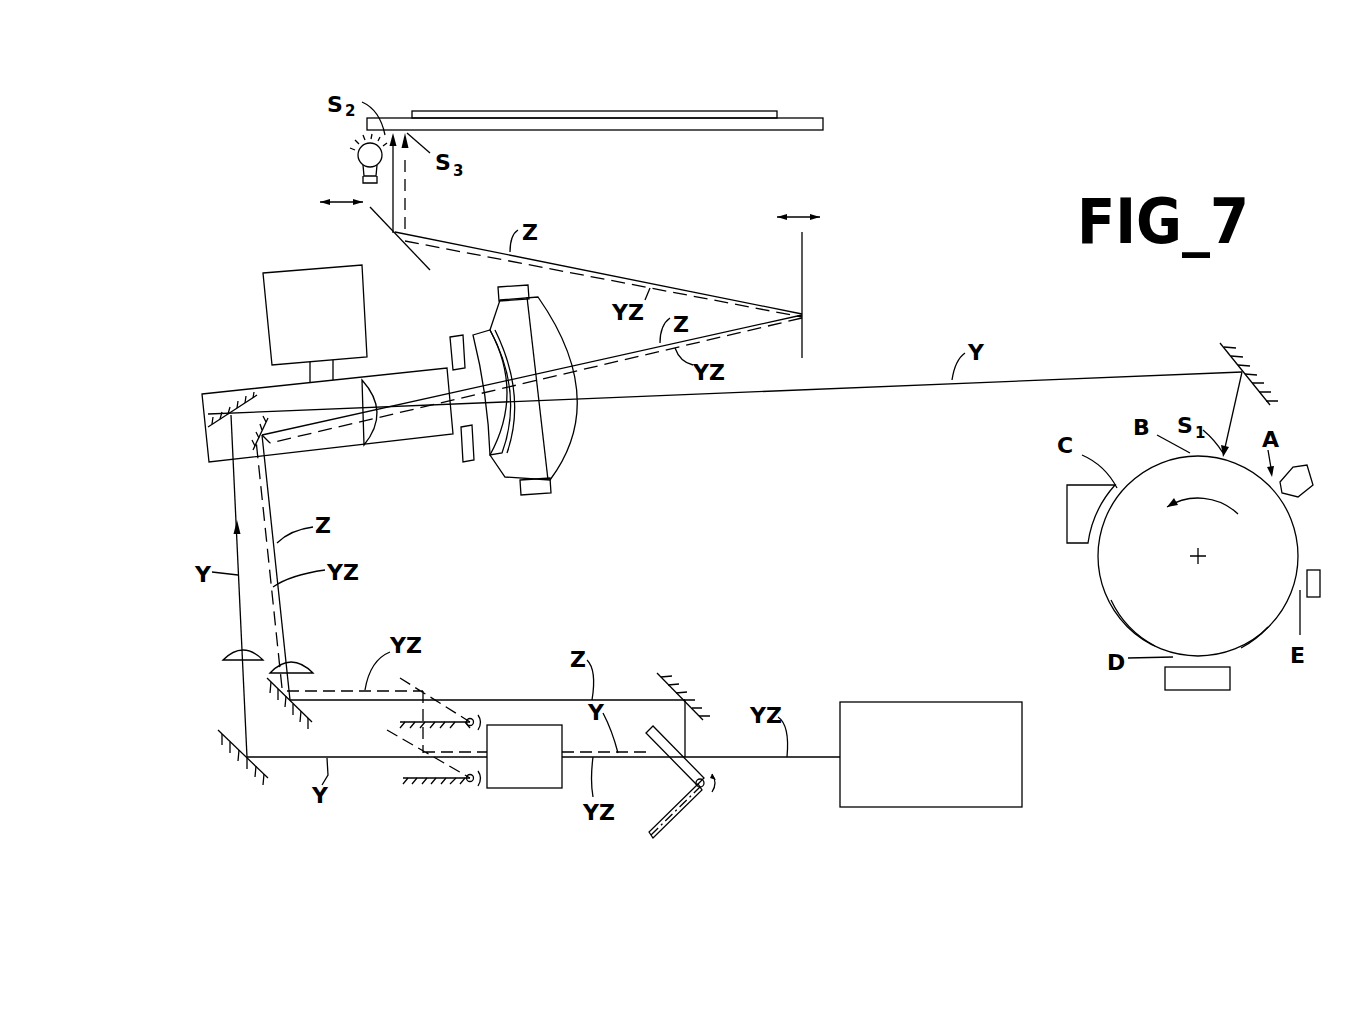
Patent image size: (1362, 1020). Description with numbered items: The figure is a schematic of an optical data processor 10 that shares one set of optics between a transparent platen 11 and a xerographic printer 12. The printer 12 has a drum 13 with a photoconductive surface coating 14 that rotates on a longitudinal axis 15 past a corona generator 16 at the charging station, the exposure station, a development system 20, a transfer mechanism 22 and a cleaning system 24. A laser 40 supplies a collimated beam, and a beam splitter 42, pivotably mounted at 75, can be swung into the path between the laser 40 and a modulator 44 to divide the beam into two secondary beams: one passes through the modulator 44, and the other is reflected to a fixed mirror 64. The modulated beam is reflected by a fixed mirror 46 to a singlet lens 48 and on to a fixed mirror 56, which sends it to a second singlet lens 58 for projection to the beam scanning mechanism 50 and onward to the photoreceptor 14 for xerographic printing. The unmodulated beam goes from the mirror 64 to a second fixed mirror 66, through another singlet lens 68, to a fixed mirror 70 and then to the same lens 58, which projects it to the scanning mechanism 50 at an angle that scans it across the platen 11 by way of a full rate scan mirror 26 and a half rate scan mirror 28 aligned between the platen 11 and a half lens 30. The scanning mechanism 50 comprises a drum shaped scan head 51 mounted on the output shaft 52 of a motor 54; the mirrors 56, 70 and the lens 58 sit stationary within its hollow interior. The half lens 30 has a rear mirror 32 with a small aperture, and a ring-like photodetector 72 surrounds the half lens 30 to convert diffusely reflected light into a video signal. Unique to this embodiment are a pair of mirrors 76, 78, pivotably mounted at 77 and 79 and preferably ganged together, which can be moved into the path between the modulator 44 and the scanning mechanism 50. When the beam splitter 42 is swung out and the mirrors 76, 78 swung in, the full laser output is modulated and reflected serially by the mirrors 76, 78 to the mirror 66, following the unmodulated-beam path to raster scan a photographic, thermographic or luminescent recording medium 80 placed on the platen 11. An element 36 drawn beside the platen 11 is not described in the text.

The optical data processor 10 is at (987, 227).
The recording medium 80 is at (675, 105).
The transparent platen 11 is at (815, 118).
The lamp 36 is at (358, 167).
The full rate scan mirror 26 is at (377, 220).
The half rate scan mirror 28 is at (802, 243).
The motor 54 is at (265, 328).
The output shaft 52 is at (327, 367).
The beam scanning mechanism 50 is at (198, 375).
The fixed mirror 56 is at (207, 415).
The fixed mirror 70 is at (257, 447).
The scan head 51 is at (325, 435).
The singlet lens 58 is at (377, 428).
The rear mirror 32 is at (470, 460).
The half lens 30 is at (590, 471).
The ring-like photodetector 72 is at (533, 495).
The xerographic printer 12 is at (1076, 577).
The drum 13 is at (1137, 603).
The photoconductive surface coating 14 is at (1253, 643).
The longitudinal axis 15 is at (1203, 552).
The development system 20 is at (1067, 515).
The corona generator 16 is at (1307, 467).
The cleaning system 24 is at (1313, 597).
The transfer mechanism 22 is at (1192, 690).
The laser 40 is at (1022, 757).
The modulator 44 is at (528, 788).
The fixed mirror 64 is at (660, 673).
The beam splitter 42 is at (665, 760).
The pivot 75 is at (700, 787).
The mirror 78 is at (400, 722).
The pivot 79 is at (472, 718).
The mirror 76 is at (412, 784).
The pivot 77 is at (468, 781).
The second fixed mirror 66 is at (270, 704).
The fixed mirror 46 is at (248, 780).
The singlet lens 48 is at (227, 653).
The singlet lens 68 is at (310, 672).